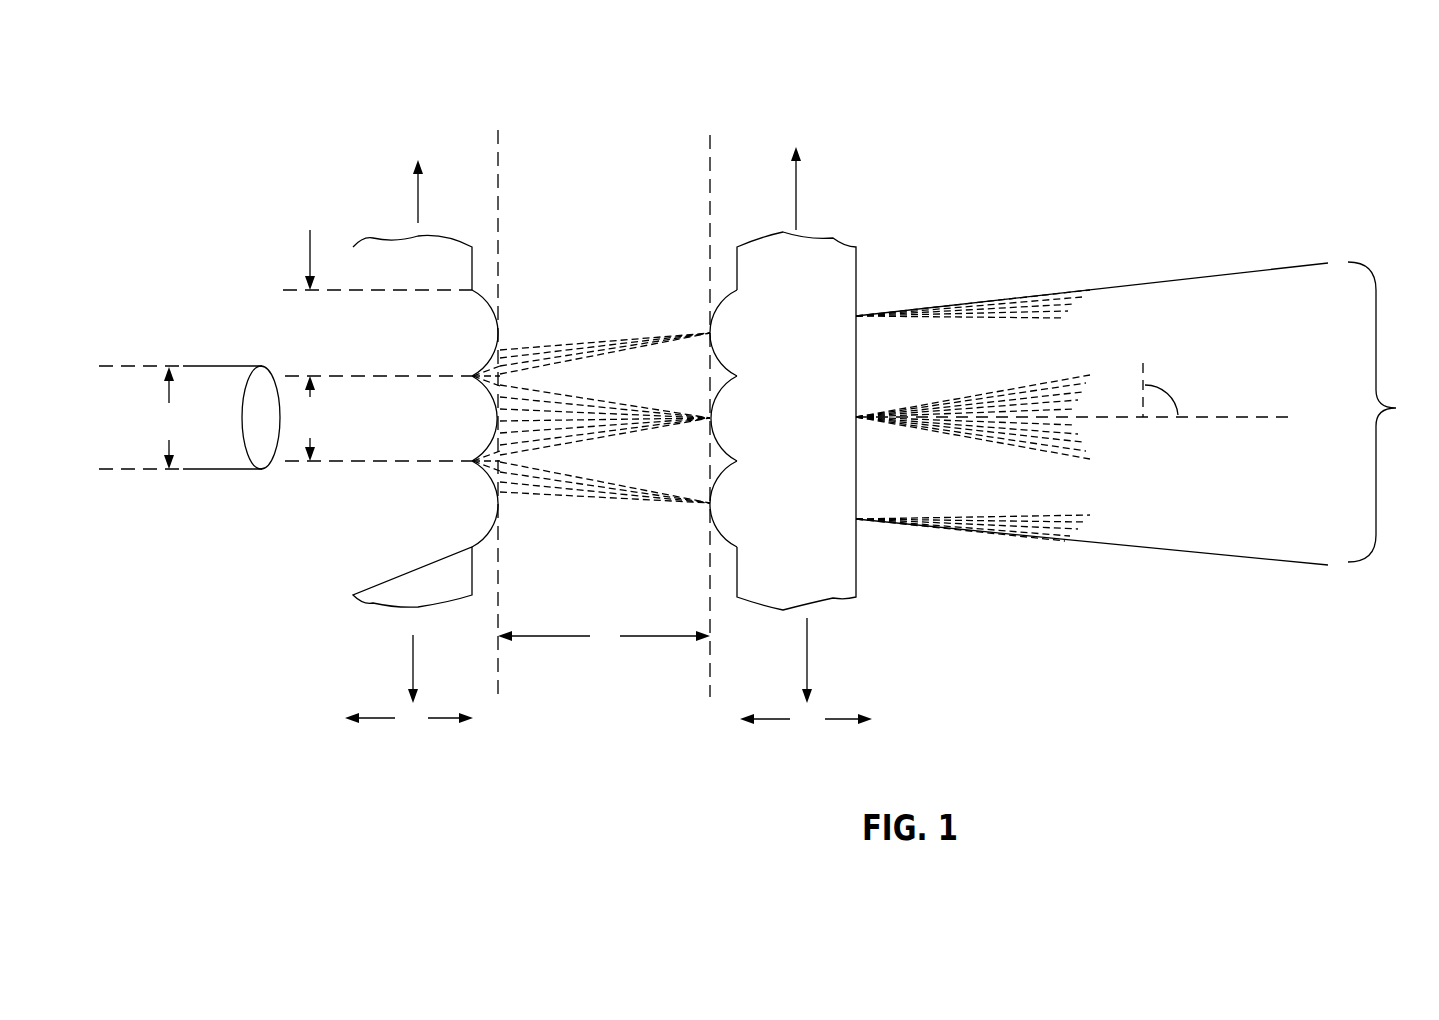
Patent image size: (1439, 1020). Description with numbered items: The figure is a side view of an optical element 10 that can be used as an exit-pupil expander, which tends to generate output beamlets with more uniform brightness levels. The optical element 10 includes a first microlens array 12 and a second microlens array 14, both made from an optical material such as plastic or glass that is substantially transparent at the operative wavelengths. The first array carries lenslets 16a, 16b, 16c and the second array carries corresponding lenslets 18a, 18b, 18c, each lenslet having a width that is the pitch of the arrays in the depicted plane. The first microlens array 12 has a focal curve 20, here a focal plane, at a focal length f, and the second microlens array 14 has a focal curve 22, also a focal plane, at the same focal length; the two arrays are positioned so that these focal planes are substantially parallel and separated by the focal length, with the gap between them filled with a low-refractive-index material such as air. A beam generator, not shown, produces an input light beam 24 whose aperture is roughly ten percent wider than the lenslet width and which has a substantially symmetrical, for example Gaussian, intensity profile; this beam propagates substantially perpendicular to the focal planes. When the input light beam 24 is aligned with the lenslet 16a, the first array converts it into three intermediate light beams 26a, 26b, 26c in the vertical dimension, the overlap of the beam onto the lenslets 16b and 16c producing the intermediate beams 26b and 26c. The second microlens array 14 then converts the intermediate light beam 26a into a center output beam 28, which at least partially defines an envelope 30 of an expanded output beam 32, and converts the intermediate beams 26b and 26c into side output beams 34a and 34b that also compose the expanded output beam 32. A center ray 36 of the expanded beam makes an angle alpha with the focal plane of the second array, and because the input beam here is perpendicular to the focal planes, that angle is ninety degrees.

The optical element 10 is at (353, 797).
The first microlens array 12 is at (376, 238).
The second microlens array 14 is at (843, 240).
The lenslet 16a is at (478, 443).
The lenslet 16b is at (490, 332).
The lenslet 16c is at (497, 505).
The lenslet 18a is at (713, 420).
The lenslet 18b is at (713, 345).
The lenslet 18c is at (725, 530).
The focal curve 20 is at (498, 132).
The focal curve 22 is at (712, 617).
The input light beam 24 is at (192, 470).
The intermediate light beam 26a is at (605, 438).
The intermediate light beam 26b is at (586, 354).
The intermediate light beam 26c is at (576, 488).
The center output beam 28 is at (916, 427).
The envelope 30 is at (1233, 271).
The expanded output beam 32 is at (1391, 412).
The side output beam 34a is at (948, 318).
The side output beam 34b is at (1017, 521).
The center ray 36 is at (1213, 421).